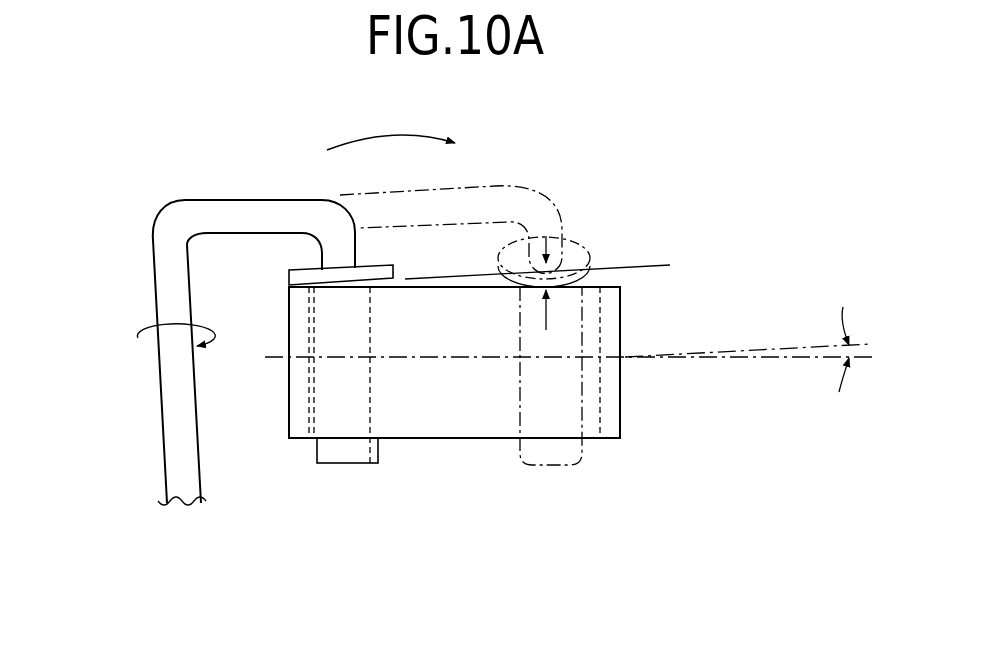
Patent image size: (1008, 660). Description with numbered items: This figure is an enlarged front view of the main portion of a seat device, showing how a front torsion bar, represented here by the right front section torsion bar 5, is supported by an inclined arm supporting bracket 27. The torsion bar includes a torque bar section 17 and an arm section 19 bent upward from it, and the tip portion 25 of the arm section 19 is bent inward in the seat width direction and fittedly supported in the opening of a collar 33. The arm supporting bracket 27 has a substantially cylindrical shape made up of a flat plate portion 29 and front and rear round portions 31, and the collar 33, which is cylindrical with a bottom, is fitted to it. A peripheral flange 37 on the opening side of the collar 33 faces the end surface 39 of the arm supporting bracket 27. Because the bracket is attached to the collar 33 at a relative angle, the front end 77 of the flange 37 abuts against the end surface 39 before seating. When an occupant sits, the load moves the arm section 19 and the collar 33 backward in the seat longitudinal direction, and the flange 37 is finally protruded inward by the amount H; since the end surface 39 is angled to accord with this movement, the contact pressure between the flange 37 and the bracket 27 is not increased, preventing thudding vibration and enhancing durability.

The right front section torsion bar 5 is at (158, 206).
The arm section 19 is at (248, 200).
The torque bar section 17 is at (163, 423).
The tip portion 25 is at (353, 232).
The front end 77 is at (288, 280).
The peripheral flange 37 is at (393, 268).
The protrusion amount H is at (558, 240).
The arm supporting bracket 27 is at (630, 312).
The round portion 31 is at (289, 398).
The flat plate portion 29 is at (462, 438).
The end surface 39 is at (467, 288).
The collar 33 is at (345, 464).